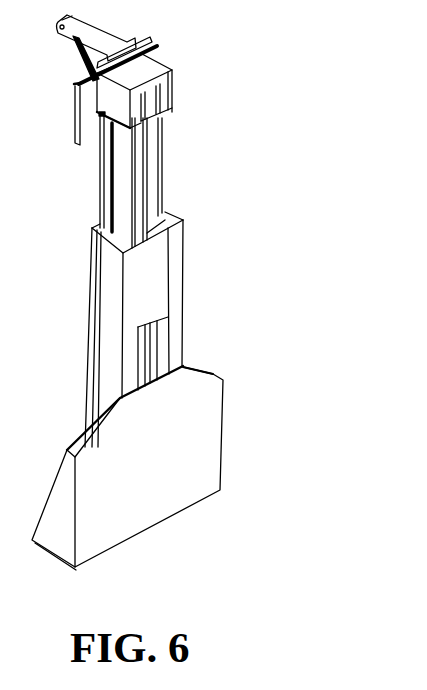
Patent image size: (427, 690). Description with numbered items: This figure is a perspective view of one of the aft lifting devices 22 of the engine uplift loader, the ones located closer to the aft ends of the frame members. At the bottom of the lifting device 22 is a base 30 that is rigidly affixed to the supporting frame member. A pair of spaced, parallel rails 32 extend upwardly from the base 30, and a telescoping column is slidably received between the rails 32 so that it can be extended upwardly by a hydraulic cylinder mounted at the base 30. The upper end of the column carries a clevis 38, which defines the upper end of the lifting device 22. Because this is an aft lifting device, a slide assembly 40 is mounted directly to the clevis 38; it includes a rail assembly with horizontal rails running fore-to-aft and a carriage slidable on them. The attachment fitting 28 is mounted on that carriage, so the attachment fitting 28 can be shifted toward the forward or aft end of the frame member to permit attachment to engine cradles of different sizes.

The lifting device 22 is at (220, 110).
The attachment fitting 28 is at (80, 25).
The base 30 is at (207, 446).
The rails 32 is at (104, 297).
The clevis 38 is at (152, 65).
The slide assembly 40 is at (72, 97).